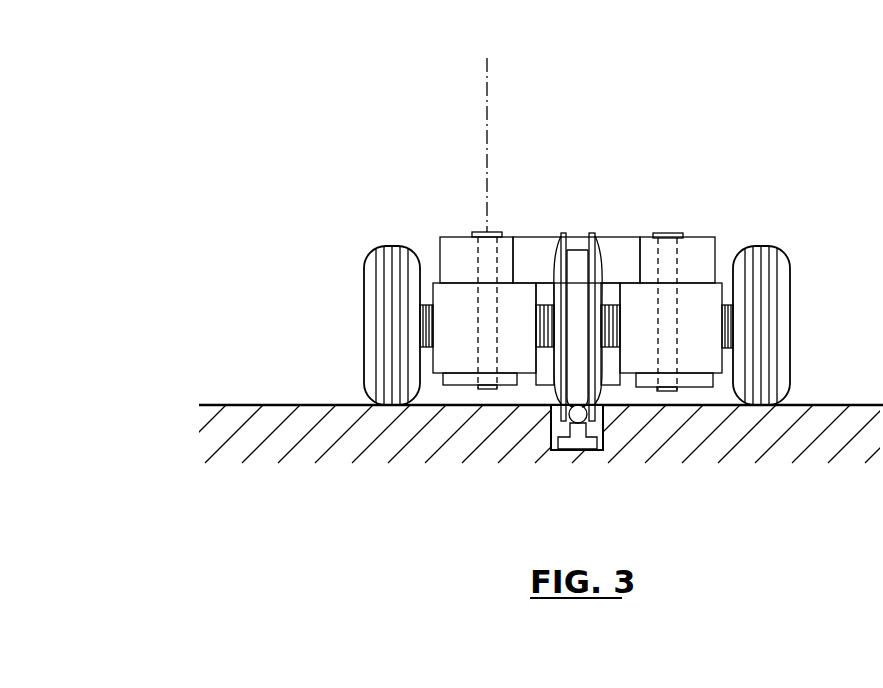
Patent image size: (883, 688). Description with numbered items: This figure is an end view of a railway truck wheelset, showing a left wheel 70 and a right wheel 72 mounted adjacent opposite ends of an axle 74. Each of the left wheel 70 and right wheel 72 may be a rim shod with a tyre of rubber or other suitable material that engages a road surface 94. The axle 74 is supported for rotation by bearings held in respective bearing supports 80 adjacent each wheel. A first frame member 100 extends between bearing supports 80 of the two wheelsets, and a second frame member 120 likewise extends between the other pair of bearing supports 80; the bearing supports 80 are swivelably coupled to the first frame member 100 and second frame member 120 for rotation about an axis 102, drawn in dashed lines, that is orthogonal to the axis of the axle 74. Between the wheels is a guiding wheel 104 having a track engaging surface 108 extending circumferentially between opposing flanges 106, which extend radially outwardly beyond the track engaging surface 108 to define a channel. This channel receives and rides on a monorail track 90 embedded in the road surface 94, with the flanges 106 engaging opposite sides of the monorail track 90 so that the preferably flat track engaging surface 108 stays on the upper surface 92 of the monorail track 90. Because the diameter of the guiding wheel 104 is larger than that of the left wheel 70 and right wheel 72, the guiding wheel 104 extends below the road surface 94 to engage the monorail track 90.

The left wheel 70 is at (365, 360).
The right wheel 72 is at (790, 365).
The axle 74 is at (422, 248).
The bearing support 80 is at (702, 292).
The monorail track 90 is at (580, 450).
The upper surface of the monorail 92 is at (552, 406).
The road surface 94 is at (232, 405).
The first frame member 100 is at (693, 245).
The axis 102 is at (487, 109).
The guiding wheel 104 is at (600, 257).
The flanges 106 is at (558, 258).
The track engaging surface 108 is at (574, 258).
The second frame member 120 is at (440, 240).